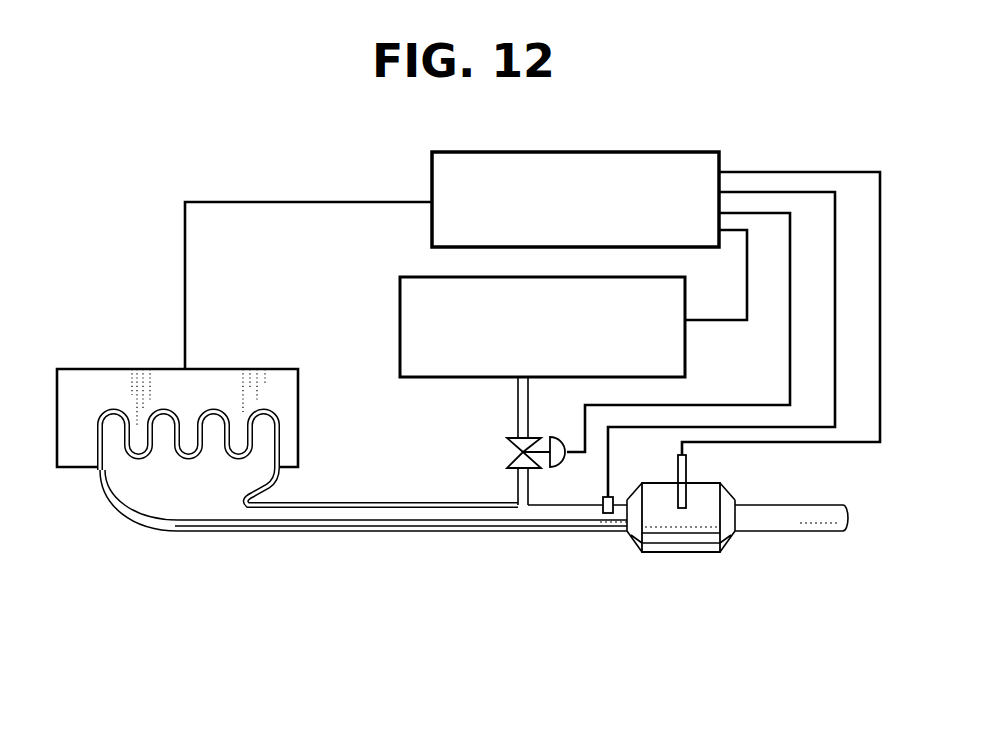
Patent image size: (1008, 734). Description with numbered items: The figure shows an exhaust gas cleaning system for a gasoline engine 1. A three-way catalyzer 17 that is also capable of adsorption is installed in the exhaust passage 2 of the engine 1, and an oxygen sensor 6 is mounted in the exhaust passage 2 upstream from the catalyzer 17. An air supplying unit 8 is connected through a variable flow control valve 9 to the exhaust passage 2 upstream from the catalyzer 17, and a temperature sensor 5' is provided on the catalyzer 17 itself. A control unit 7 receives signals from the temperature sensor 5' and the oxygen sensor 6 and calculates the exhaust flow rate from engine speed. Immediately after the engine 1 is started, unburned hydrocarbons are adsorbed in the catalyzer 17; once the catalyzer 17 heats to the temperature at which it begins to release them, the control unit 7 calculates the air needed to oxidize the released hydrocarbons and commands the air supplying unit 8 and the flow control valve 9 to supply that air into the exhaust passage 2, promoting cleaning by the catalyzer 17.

The gasoline engine 1 is at (113, 380).
The exhaust passage 2 is at (330, 516).
The control unit 7 is at (632, 152).
The air supplying unit 8 is at (398, 317).
The variable flow control valve 9 is at (503, 453).
The oxygen sensor 6 is at (603, 497).
The temperature sensor 5' is at (734, 481).
The three-way catalyzer capable of adsorption 17 is at (685, 547).